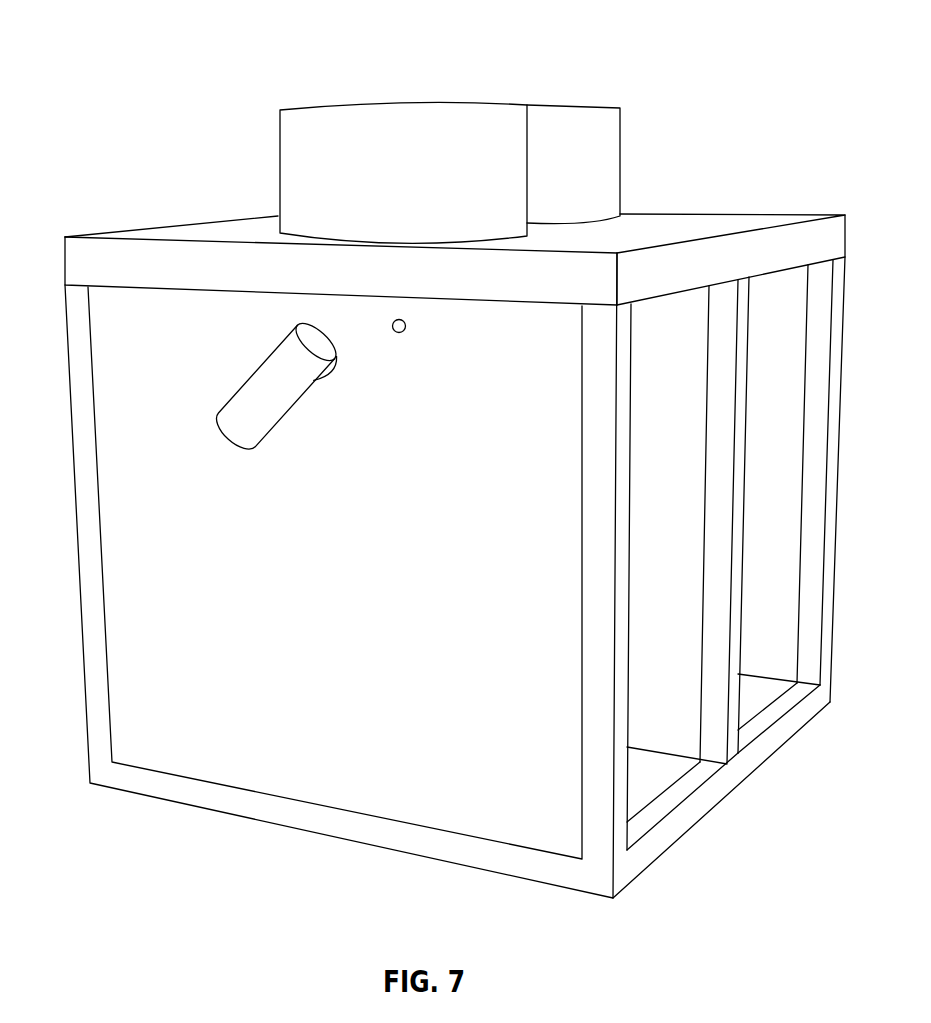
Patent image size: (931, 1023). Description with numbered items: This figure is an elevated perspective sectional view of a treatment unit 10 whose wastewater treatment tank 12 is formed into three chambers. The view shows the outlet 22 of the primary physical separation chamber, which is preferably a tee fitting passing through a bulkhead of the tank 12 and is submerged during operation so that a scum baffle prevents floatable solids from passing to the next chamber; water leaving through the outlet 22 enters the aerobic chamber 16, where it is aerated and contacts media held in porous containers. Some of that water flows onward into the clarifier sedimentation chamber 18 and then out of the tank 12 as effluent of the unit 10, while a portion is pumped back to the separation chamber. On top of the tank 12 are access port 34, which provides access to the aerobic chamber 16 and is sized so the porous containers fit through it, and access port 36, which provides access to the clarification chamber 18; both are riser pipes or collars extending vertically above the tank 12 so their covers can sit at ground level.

The treatment unit 10 is at (103, 62).
The wastewater treatment tank 12 is at (70, 262).
The aerobic chamber 16 is at (686, 740).
The clarifier sedimentation chamber 18 is at (785, 654).
The outlet 22 is at (250, 402).
The access port 34 is at (291, 152).
The access port 36 is at (612, 153).